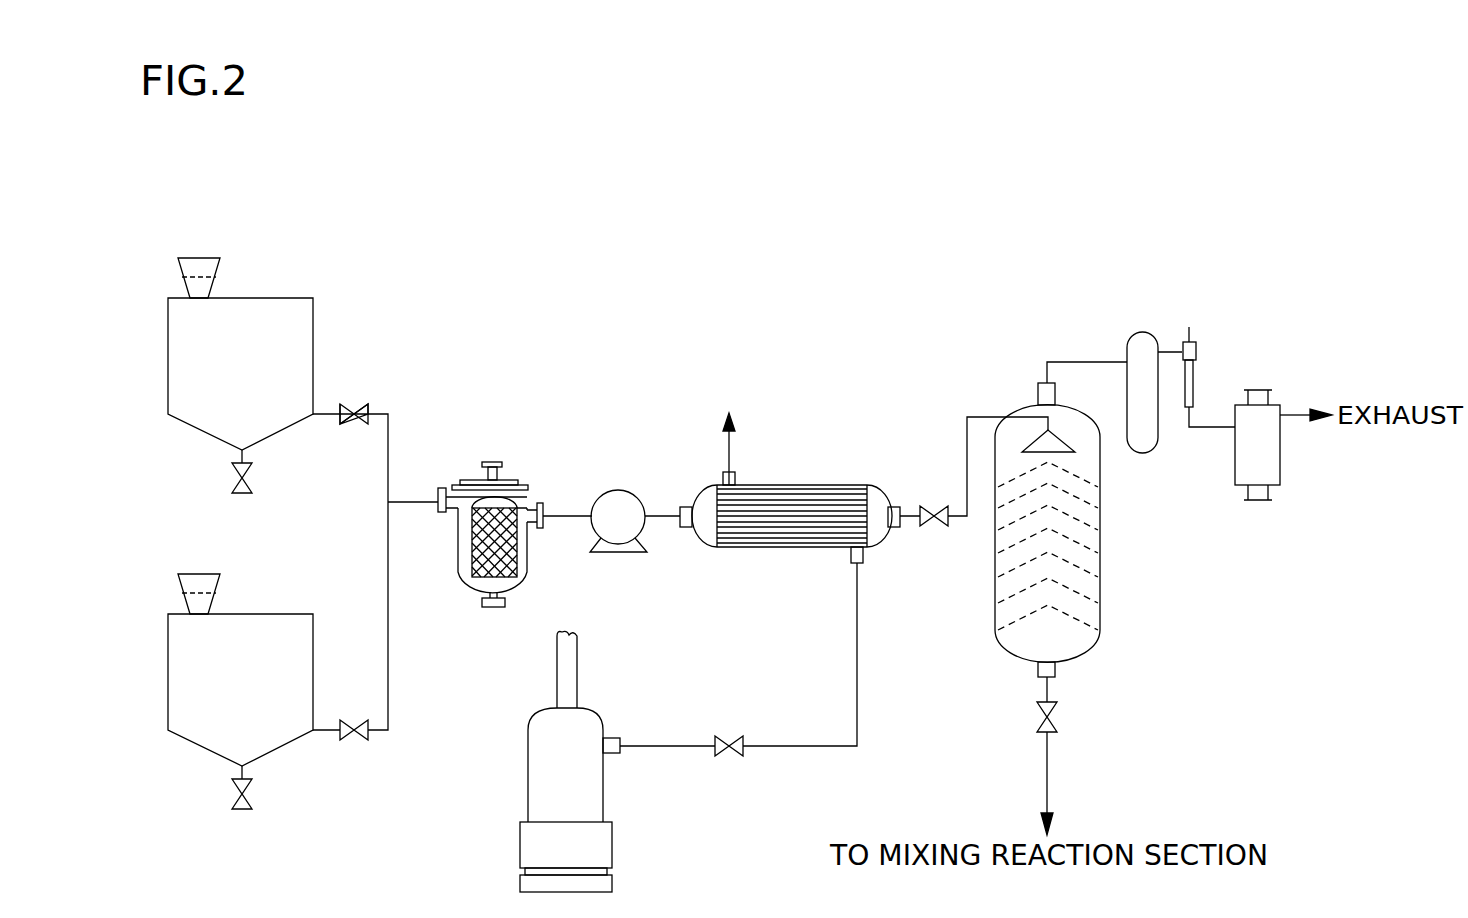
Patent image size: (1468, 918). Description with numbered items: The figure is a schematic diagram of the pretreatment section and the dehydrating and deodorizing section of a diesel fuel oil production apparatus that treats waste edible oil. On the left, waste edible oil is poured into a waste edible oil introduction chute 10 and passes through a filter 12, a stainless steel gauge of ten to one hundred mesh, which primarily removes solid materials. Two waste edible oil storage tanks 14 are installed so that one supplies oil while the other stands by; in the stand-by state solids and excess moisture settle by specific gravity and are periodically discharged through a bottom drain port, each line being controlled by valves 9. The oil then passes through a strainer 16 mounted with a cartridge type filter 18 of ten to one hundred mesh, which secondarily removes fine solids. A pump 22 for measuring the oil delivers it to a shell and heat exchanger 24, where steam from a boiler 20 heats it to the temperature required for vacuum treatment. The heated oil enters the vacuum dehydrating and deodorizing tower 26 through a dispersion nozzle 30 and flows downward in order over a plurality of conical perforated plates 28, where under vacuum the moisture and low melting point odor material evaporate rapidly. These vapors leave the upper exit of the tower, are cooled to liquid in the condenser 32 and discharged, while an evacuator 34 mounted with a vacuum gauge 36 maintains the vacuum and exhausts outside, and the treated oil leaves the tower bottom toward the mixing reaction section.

The valve 9 is at (352, 432).
The waste edible oil introduction chute 10 is at (193, 262).
The filter 12 is at (213, 277).
The waste edible oil storage tank 14 is at (190, 424).
The strainer 16 is at (511, 480).
The cartridge type filter 18 is at (470, 548).
The boiler 20 is at (543, 773).
The pump 22 is at (618, 490).
The shell and heat exchanger 24 is at (783, 548).
The vacuum dehydrating and deodorizing tower 26 is at (1101, 540).
The conical perforated plate 28 is at (1008, 578).
The dispersion nozzle 30 is at (1060, 450).
The condenser 32 is at (1138, 346).
The evacuator 34 is at (1270, 460).
The vacuum gauge 36 is at (1197, 360).